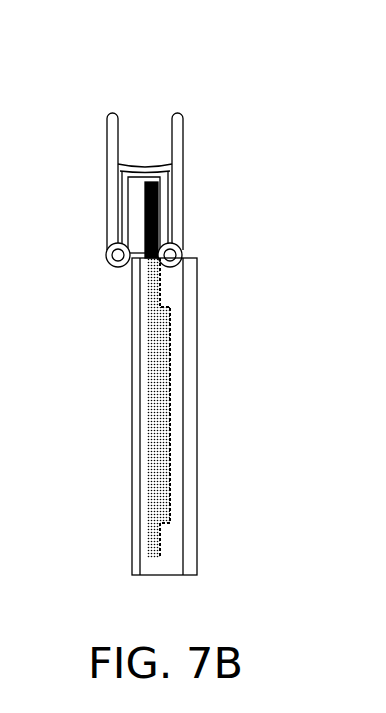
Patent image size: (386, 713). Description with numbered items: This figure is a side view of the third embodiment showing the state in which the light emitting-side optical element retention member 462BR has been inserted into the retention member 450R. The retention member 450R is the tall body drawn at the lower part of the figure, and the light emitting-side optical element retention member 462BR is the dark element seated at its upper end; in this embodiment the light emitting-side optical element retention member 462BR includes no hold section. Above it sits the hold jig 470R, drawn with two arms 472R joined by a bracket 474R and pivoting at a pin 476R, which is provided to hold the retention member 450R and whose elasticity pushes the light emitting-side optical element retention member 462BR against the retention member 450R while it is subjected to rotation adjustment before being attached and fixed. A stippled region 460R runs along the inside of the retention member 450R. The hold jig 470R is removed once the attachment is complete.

The hold jig 470R is at (139, 97).
The clip arm 472R is at (183, 132).
The clip bracket 474R is at (122, 170).
The light emitting-side optical element retention member 462BR is at (167, 192).
The pivot pin 476R is at (140, 227).
The retention member 450R is at (197, 290).
The spring member 460R is at (172, 437).